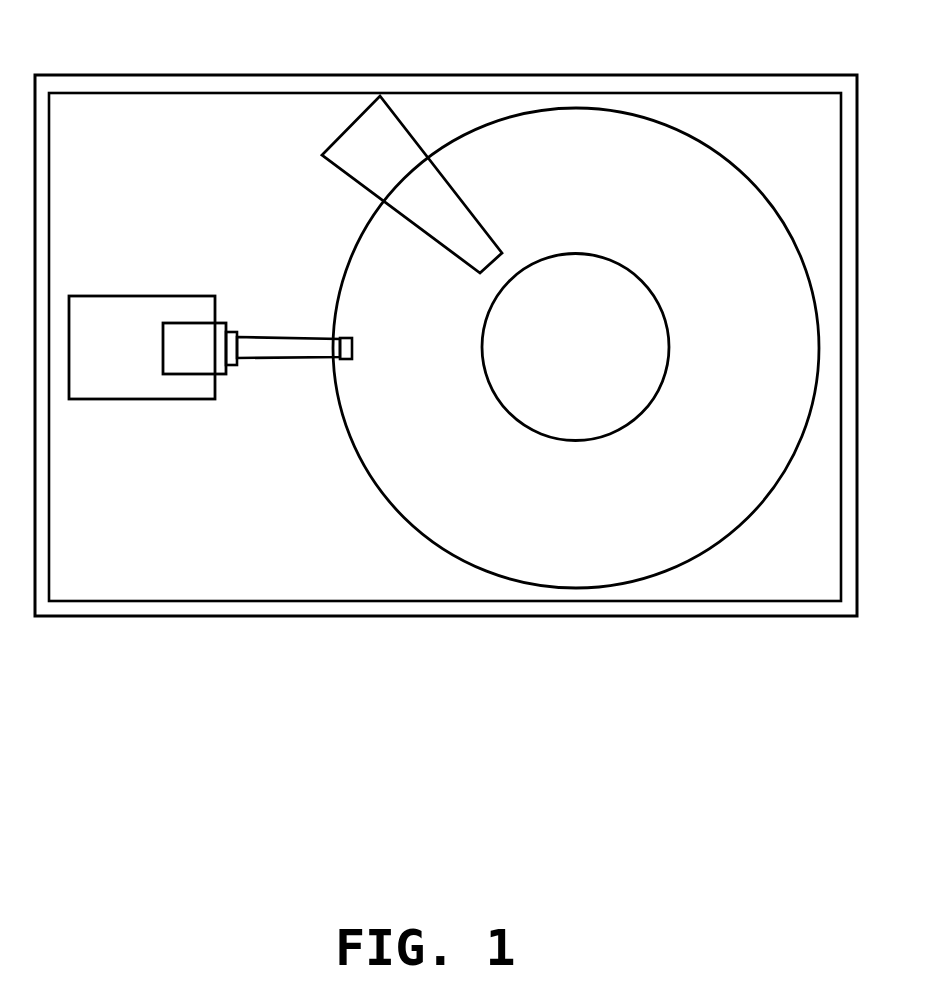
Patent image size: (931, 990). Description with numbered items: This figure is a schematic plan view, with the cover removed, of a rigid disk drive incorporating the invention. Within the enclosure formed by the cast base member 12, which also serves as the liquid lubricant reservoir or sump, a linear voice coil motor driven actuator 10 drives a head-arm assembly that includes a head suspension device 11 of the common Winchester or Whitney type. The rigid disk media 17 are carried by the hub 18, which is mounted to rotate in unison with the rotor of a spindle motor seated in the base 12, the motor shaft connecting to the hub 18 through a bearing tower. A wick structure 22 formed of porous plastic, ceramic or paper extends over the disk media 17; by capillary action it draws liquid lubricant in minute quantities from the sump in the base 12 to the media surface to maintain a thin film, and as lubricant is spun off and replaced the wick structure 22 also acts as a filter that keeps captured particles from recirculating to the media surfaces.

The actuator 10 is at (186, 296).
The head suspension device 11 is at (287, 337).
The cast base member 12 is at (590, 616).
The rigid disk media 17 is at (738, 167).
The hub 18 is at (594, 363).
The wick structure 22 is at (405, 124).